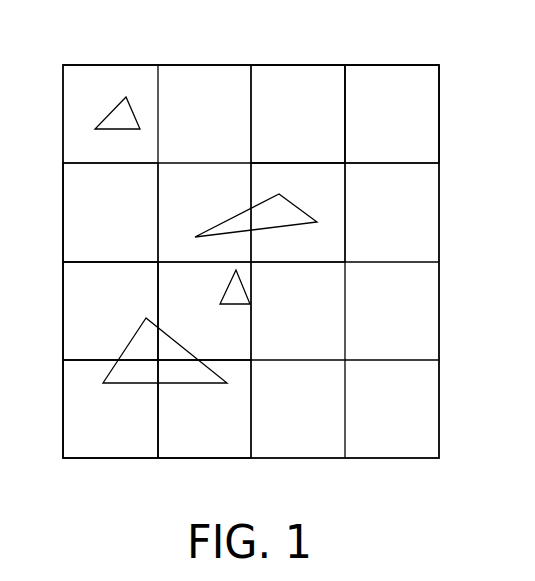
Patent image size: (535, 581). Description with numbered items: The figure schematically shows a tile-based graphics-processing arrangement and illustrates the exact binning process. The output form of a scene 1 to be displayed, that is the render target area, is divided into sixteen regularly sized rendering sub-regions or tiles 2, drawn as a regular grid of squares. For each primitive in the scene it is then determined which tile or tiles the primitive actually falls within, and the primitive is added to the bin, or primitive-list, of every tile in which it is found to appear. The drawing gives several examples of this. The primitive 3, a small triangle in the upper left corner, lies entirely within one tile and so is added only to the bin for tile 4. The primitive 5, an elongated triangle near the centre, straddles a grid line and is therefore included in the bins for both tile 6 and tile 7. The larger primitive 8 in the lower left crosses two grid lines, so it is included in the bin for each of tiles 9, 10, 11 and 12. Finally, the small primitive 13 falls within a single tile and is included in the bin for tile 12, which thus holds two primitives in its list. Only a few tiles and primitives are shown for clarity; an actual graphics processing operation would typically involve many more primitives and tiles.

The scene 1 is at (58, 60).
The tiles 2 is at (296, 63).
The primitive 3 is at (112, 113).
The tile 4 is at (108, 64).
The primitive 5 is at (227, 218).
The tile 6 is at (178, 186).
The tile 7 is at (325, 238).
The primitive 8 is at (178, 385).
The tile 9 is at (104, 430).
The tile 10 is at (80, 303).
The tile 11 is at (230, 430).
The tile 12 is at (231, 328).
The primitive 13 is at (245, 287).